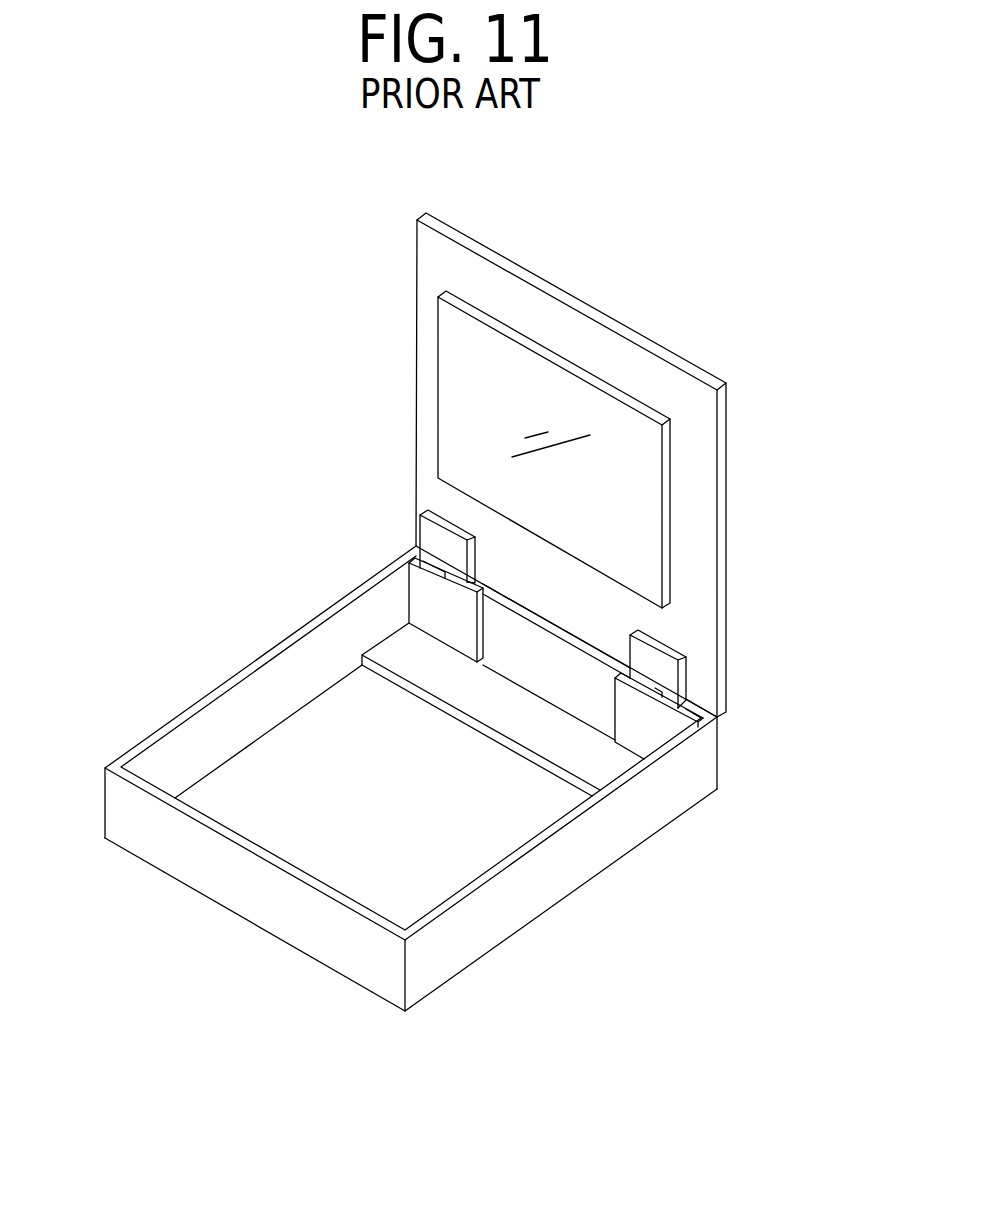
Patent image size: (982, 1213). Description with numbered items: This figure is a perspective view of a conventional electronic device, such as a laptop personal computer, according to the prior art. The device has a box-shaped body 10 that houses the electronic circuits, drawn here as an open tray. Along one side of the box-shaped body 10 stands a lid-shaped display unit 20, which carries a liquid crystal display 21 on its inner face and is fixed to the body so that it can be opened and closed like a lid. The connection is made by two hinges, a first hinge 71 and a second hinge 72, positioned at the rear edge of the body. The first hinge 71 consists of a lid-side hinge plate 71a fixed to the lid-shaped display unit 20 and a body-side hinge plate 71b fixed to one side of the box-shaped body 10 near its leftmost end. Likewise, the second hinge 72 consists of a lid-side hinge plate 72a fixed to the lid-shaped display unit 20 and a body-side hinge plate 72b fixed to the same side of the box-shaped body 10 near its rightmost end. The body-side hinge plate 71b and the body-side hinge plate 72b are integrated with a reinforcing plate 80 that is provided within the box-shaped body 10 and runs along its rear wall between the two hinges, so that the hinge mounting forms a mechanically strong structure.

The box-shaped body 10 is at (150, 900).
The lid-shaped display unit 20 is at (380, 330).
The liquid crystal display 21 is at (537, 397).
The first hinge 71 is at (251, 492).
The lid-side hinge plate 71a is at (433, 541).
The body-side hinge plate 71b is at (433, 598).
The second hinge 72 is at (829, 656).
The lid-side hinge plate 72a is at (658, 667).
The body-side hinge plate 72b is at (645, 723).
The reinforcing plate 80 is at (603, 765).